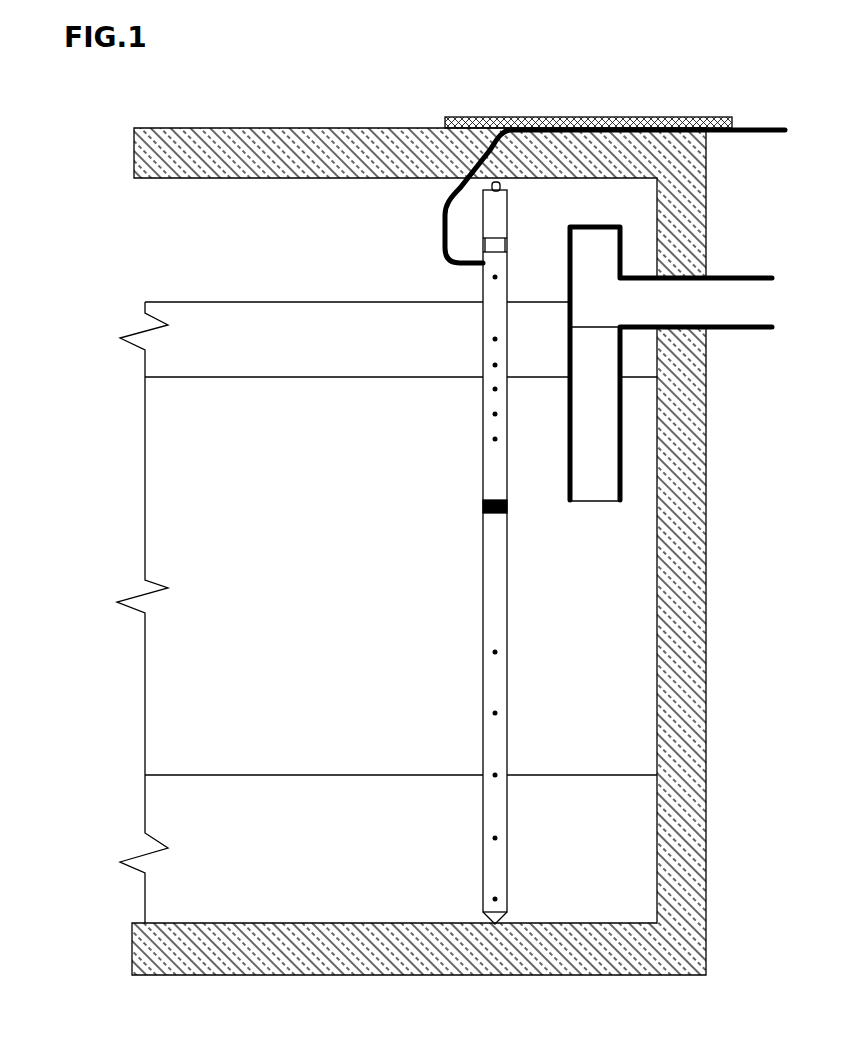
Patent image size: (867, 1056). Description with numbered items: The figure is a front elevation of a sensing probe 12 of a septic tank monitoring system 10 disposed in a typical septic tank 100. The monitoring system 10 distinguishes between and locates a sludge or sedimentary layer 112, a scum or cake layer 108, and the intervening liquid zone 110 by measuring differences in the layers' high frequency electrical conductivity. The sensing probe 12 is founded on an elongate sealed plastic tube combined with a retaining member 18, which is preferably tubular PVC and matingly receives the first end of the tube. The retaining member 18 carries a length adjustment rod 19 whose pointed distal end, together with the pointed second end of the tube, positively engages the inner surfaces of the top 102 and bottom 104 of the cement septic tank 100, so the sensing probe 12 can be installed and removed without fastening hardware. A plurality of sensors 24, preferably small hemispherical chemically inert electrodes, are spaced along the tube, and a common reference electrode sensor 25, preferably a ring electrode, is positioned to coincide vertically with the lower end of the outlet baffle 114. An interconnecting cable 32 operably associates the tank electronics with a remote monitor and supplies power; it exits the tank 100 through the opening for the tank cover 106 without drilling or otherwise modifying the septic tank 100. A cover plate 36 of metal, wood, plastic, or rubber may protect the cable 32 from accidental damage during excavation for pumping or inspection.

The septic tank 100 is at (75, 122).
The septic tank monitoring system 10 is at (436, 553).
The sensing probe 12 is at (440, 557).
The retaining member 18 is at (567, 228).
The length adjustment rod 19 is at (500, 186).
The sensors 24 is at (494, 775).
The reference electrode sensor 25 is at (483, 505).
The interconnecting cable 32 is at (639, 161).
The cover plate 36 is at (588, 93).
The top 102 is at (400, 203).
The bottom 104 is at (419, 691).
The tank cover 106 is at (415, 211).
The scum layer 108 is at (145, 362).
The liquid zone 110 is at (145, 563).
The sludge layer 112 is at (145, 823).
The outlet baffle 114 is at (654, 391).